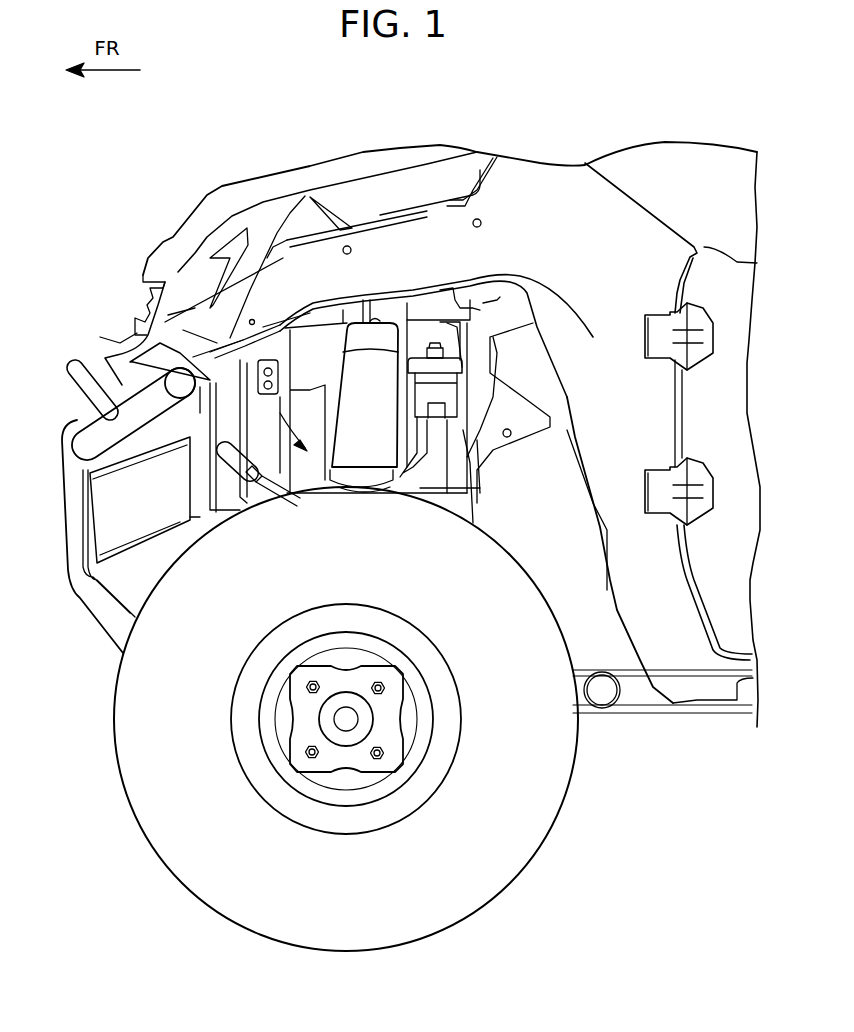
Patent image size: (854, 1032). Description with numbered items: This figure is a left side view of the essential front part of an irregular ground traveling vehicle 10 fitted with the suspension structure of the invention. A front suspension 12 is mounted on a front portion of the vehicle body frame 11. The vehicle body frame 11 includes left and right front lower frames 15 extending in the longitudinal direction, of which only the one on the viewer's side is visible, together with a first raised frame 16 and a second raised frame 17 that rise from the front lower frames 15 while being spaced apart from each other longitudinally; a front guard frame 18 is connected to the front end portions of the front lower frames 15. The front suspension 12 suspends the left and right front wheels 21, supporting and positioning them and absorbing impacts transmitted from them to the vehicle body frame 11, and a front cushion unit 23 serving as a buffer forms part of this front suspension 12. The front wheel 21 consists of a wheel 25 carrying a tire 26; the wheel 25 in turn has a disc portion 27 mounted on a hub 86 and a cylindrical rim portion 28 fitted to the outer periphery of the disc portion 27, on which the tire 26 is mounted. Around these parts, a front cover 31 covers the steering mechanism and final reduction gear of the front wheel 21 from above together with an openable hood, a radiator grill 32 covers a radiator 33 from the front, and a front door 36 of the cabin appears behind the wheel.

The irregular ground traveling vehicle 10 is at (107, 232).
The vehicle body frame 11 is at (683, 720).
The front suspension 12 is at (253, 357).
The front lower frame 15 is at (637, 694).
The first raised frame 16 is at (258, 430).
The second raised frame 17 is at (507, 400).
The front guard frame 18 is at (77, 535).
The front wheel 21 is at (113, 711).
The front cushion unit 23 is at (350, 383).
The wheel 25 is at (257, 767).
The tire 26 is at (527, 837).
The disc portion 27 is at (320, 767).
The rim portion 28 is at (345, 830).
The front cover 31 is at (357, 183).
The radiator grill 32 is at (122, 372).
The radiator 33 is at (607, 203).
The front door 36 is at (723, 607).
The hub 86 is at (347, 737).